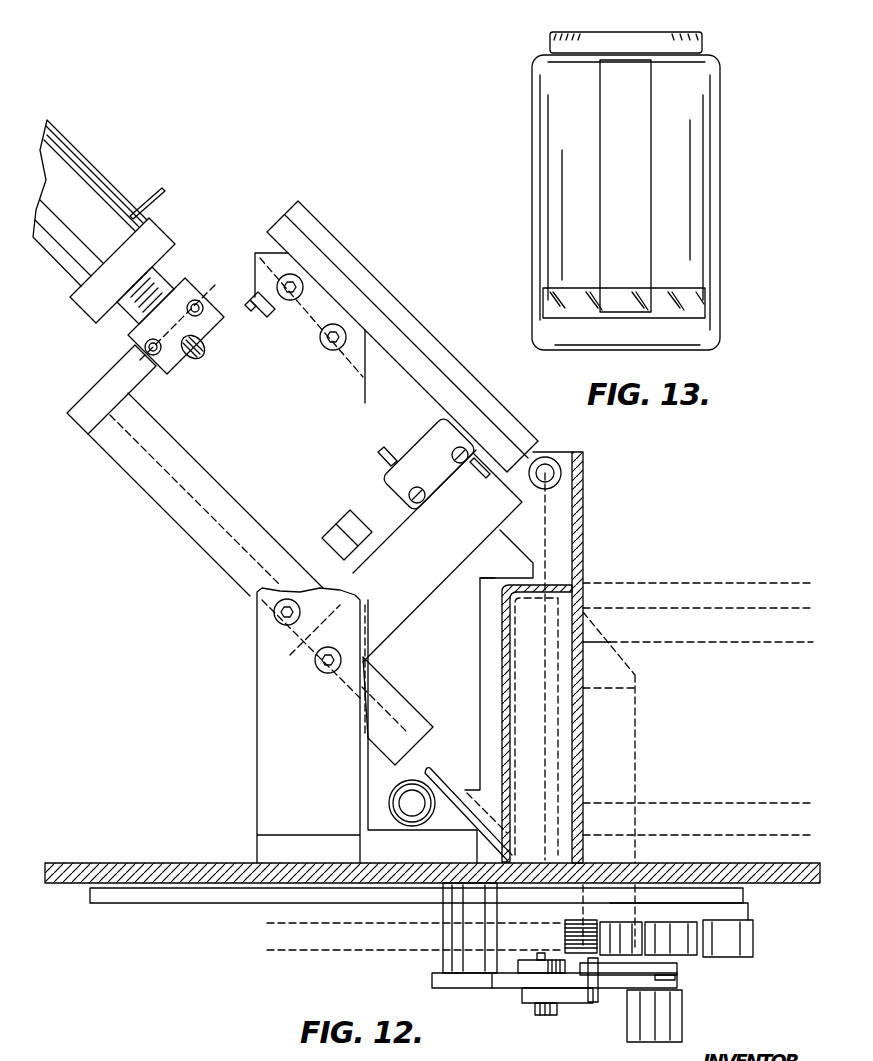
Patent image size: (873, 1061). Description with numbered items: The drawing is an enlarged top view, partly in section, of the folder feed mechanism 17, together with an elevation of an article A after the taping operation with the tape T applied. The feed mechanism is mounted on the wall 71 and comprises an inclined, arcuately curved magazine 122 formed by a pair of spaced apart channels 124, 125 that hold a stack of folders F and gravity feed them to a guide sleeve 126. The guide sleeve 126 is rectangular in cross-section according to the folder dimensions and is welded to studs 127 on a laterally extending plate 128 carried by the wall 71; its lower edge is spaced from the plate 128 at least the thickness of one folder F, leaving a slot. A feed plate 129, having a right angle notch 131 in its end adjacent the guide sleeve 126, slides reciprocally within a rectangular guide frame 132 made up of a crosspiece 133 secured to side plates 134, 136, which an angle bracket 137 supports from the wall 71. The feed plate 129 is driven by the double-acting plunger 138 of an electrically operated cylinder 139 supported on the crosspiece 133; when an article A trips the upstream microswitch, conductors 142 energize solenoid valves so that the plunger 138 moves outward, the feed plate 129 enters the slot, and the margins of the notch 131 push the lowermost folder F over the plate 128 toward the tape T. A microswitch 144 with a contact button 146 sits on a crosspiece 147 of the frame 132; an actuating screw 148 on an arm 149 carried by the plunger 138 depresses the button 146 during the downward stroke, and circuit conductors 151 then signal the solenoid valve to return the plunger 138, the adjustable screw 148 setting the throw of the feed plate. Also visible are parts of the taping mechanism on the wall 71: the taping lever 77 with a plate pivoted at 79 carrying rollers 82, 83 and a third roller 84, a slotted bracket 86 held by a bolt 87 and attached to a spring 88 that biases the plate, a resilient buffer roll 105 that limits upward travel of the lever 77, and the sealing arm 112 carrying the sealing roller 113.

In FIG. 12, the folder feed mechanism 17 is at (124, 657).
In FIG. 12, the wall 71 is at (172, 863).
In FIG. 12, the taping arm or lever 77 is at (470, 990).
In FIG. 12, the pivot 79 is at (680, 974).
In FIG. 12, the roller 82 is at (565, 938).
In FIG. 12, the roller 83 is at (626, 914).
In FIG. 12, the third roller 84 is at (668, 926).
In FIG. 12, the slotted bracket 86 is at (575, 996).
In FIG. 12, the bolt 87 is at (535, 1010).
In FIG. 12, the spring 88 is at (596, 990).
In FIG. 12, the buffer roll 105 is at (682, 1012).
In FIG. 12, the sealing arm 112 is at (208, 905).
In FIG. 12, the sealing roller 113 is at (748, 943).
In FIG. 12, the magazine or chute 122 is at (770, 592).
In FIG. 12, the channel 124 is at (678, 590).
In FIG. 12, the channel 125 is at (722, 843).
In FIG. 12, the guide sleeve 126 is at (502, 690).
In FIG. 12, the studs 127 is at (546, 456).
In FIG. 12, the laterally extending plate 128 is at (368, 778).
In FIG. 12, the feed plate 129 is at (493, 578).
In FIG. 12, the right angle notch 131 is at (486, 614).
In FIG. 12, the guide frame 132 is at (147, 531).
In FIG. 12, the crosspiece 133 is at (96, 398).
In FIG. 12, the side plate 134 is at (112, 440).
In FIG. 12, the side plate 136 is at (385, 358).
In FIG. 12, the angle bracket 137 is at (256, 250).
In FIG. 12, the plunger 138 is at (212, 393).
In FIG. 12, the electrically operated cylinder 139 is at (100, 200).
In FIG. 12, the conductors 142 is at (163, 191).
In FIG. 12, the microswitch 144 is at (393, 482).
In FIG. 12, the contact button 146 is at (380, 452).
In FIG. 12, the crosspiece 147 is at (366, 532).
In FIG. 12, the actuating screw 148 is at (265, 325).
In FIG. 12, the arm 149 is at (241, 352).
In FIG. 12, the circuit conductors 151 is at (480, 478).
In FIG. 12, the folder F is at (583, 738).
In FIG. 13, the folder F is at (636, 188).
In FIG. 13, the article A is at (722, 190).
In FIG. 12, the tape T is at (340, 942).
In FIG. 13, the tape T is at (676, 298).